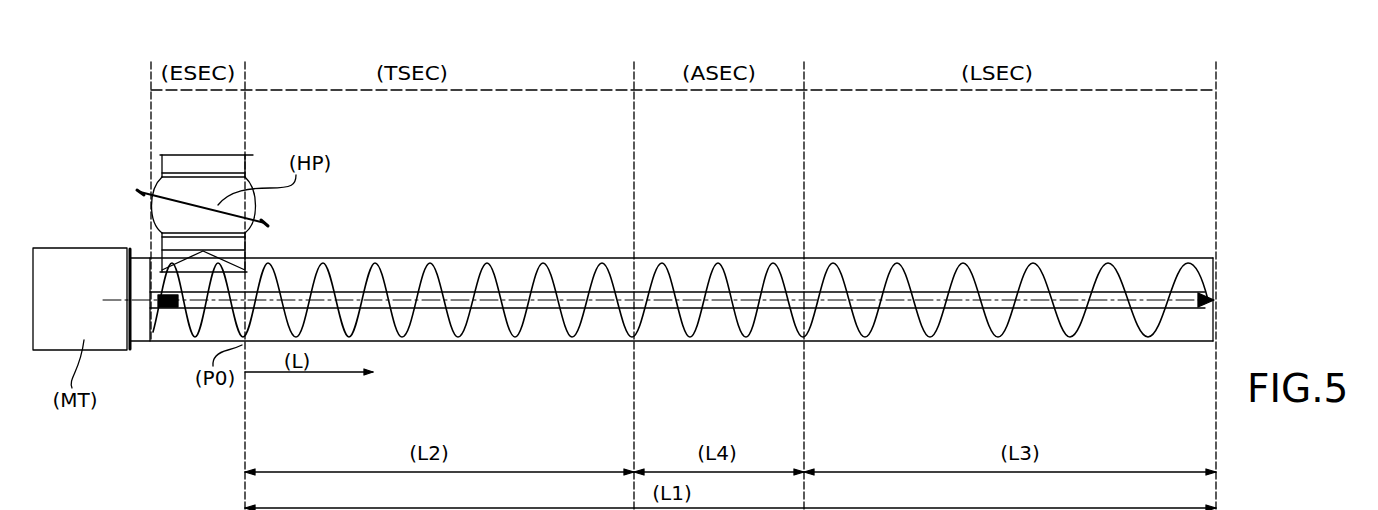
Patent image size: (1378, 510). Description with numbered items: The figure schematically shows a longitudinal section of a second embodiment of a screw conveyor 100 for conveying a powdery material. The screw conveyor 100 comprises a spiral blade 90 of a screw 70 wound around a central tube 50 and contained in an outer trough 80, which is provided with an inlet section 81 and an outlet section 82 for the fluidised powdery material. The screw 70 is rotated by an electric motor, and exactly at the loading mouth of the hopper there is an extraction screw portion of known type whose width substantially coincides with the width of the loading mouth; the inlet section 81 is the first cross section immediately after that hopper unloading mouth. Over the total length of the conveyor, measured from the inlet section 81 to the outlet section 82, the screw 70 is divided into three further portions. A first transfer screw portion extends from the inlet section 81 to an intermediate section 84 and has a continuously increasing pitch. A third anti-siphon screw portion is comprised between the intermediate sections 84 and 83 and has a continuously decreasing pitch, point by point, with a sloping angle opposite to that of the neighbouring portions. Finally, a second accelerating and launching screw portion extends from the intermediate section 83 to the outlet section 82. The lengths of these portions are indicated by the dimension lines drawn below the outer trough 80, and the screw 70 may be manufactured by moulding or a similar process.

The screw conveyor 100 is at (848, 73).
The central tube 50 is at (452, 290).
The screw 70 is at (728, 269).
The outer trough 80 is at (914, 258).
The inlet section 81 is at (243, 268).
The outlet section 82 is at (1212, 258).
The intermediate section 83 is at (805, 258).
The intermediate section 84 is at (633, 258).
The spiral blade 90 is at (1050, 258).